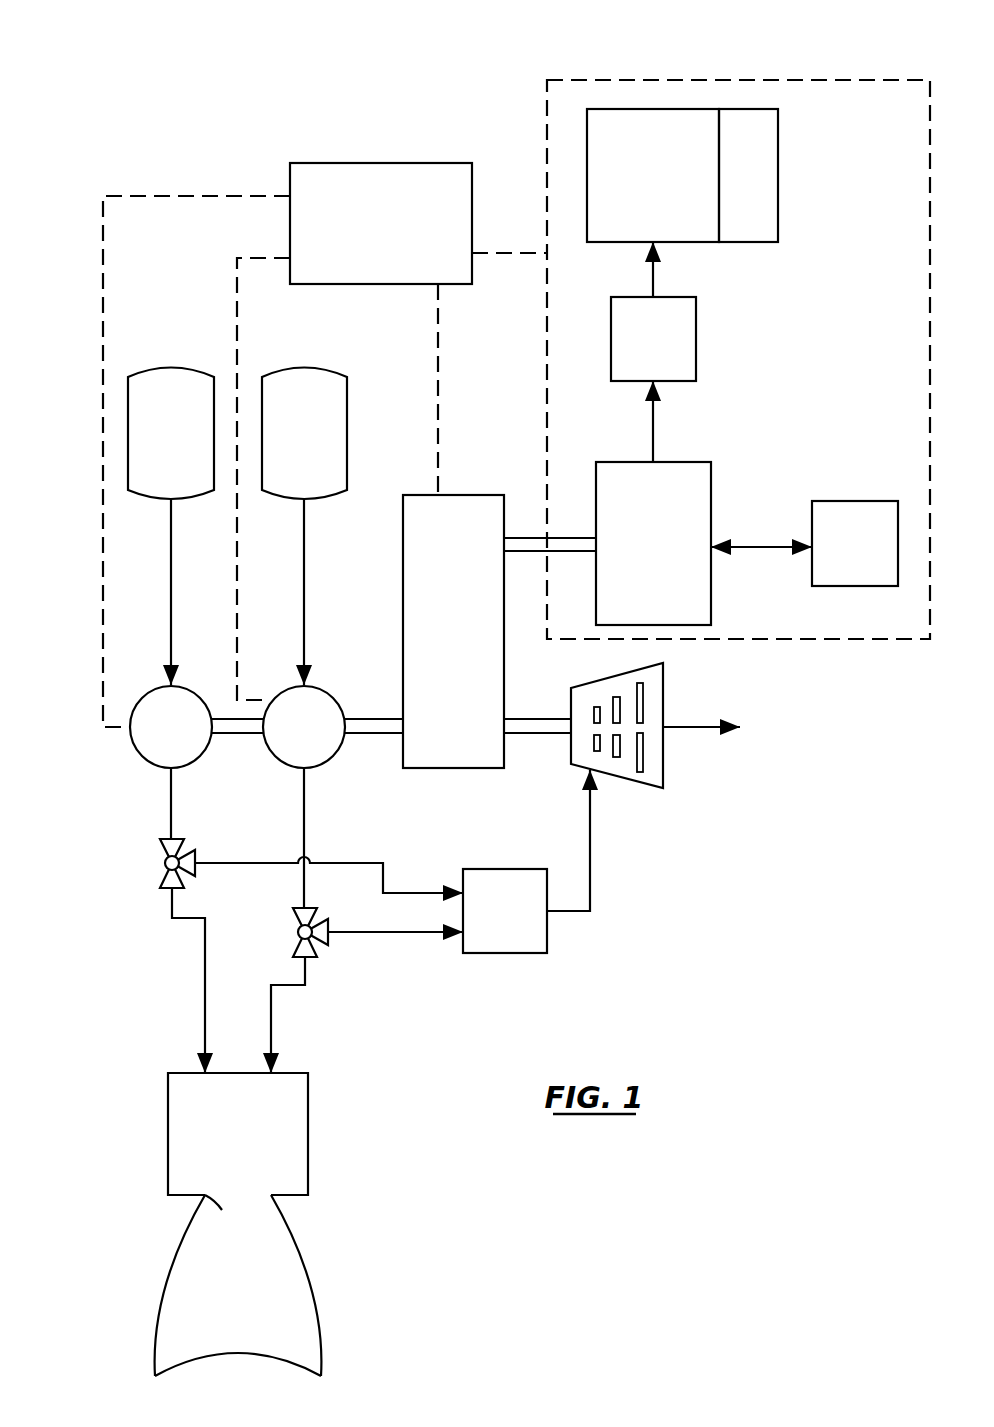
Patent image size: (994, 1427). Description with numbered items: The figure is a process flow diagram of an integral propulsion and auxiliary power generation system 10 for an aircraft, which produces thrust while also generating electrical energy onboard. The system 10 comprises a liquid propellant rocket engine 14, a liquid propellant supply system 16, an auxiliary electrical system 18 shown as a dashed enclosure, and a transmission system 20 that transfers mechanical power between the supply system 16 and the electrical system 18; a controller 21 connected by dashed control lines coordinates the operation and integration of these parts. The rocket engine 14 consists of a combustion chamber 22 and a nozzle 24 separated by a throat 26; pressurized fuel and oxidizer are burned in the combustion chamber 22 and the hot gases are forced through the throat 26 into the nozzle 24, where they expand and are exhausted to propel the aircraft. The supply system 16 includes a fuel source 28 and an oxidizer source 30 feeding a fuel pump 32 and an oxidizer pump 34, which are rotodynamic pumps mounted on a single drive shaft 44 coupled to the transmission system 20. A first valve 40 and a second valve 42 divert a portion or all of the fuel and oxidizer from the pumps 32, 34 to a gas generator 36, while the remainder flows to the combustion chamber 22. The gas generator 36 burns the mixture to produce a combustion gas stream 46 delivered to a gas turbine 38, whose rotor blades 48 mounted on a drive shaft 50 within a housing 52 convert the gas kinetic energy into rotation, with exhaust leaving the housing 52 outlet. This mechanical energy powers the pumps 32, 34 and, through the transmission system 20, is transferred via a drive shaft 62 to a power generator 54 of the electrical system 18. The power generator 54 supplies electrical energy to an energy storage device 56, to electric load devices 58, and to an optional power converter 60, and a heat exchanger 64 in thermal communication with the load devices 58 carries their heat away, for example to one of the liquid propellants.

The integral propulsion and auxiliary power generation system 10 is at (103, 152).
The liquid propellant rocket engine 14 is at (168, 1260).
The liquid propellant supply system 16 is at (106, 781).
The auxiliary electrical system 18 is at (753, 78).
The transmission system 20 is at (436, 645).
The controller 21 is at (364, 238).
The combustion chamber 22 is at (221, 1149).
The nozzle 24 is at (322, 1340).
The throat 26 is at (272, 1196).
The fuel source 28 is at (154, 453).
The oxidizer source 30 is at (287, 453).
The fuel pump 32 is at (154, 742).
The oxidizer pump 34 is at (287, 742).
The gas generator 36 is at (488, 926).
The gas turbine 38 is at (612, 778).
The first valve 40 is at (160, 866).
The second valve 42 is at (298, 930).
The drive shaft 44 is at (365, 738).
The combustion gas stream 46 is at (593, 900).
The rotor blades 48 is at (645, 755).
The drive shaft 50 is at (525, 738).
The housing 52 is at (666, 676).
The power generator 54 is at (636, 562).
The energy storage device 56 is at (838, 562).
The electric load devices 58 is at (636, 190).
The power converter 60 is at (636, 354).
The drive shaft 62 is at (576, 537).
The heat exchanger 64 is at (731, 190).